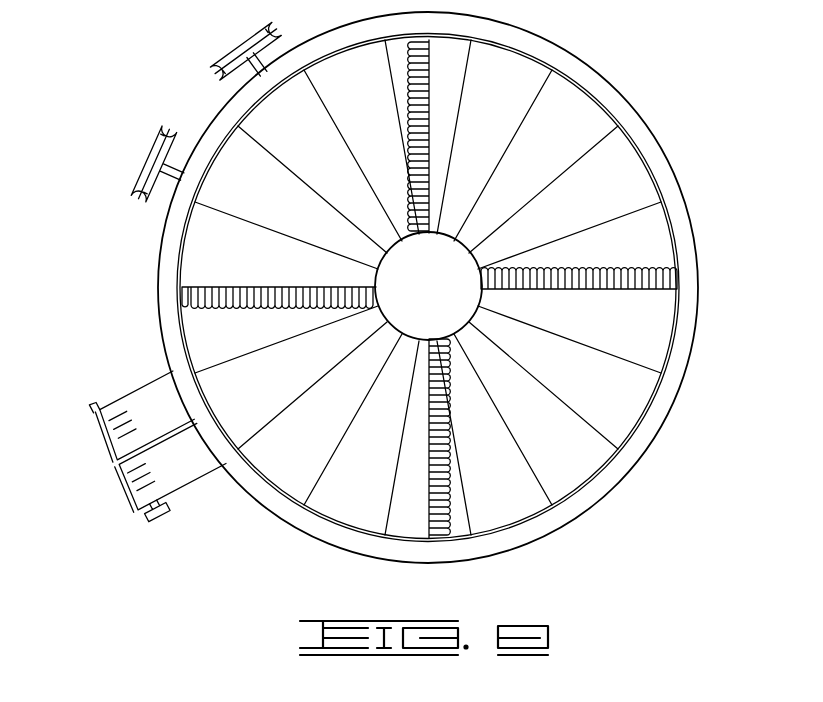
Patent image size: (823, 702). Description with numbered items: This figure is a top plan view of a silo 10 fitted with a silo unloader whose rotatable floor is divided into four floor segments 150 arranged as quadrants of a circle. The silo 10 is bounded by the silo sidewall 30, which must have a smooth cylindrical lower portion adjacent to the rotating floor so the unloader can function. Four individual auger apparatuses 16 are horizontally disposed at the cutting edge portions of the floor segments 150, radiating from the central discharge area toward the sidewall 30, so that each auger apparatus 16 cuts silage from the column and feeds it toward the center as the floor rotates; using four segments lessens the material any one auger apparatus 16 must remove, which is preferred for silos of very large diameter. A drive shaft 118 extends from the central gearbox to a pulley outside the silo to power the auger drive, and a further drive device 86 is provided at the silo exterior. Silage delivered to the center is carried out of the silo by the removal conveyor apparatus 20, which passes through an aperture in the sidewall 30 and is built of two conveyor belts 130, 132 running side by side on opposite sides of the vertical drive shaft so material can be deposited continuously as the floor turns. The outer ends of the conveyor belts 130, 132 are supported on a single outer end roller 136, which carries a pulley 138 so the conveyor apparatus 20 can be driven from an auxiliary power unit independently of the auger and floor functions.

The silo 10 is at (695, 163).
The auger apparatus 16 is at (408, 60).
The removal conveyor apparatus 20 is at (135, 460).
The silo sidewall 30 is at (689, 240).
The mounting pad 86 is at (247, 38).
The shaft 118 is at (143, 158).
The conveyor belt 130 is at (160, 377).
The conveyor belt 132 is at (178, 480).
The outer end roller 136 is at (93, 409).
The pulley 138 is at (162, 525).
The floor segment 150 is at (608, 147).